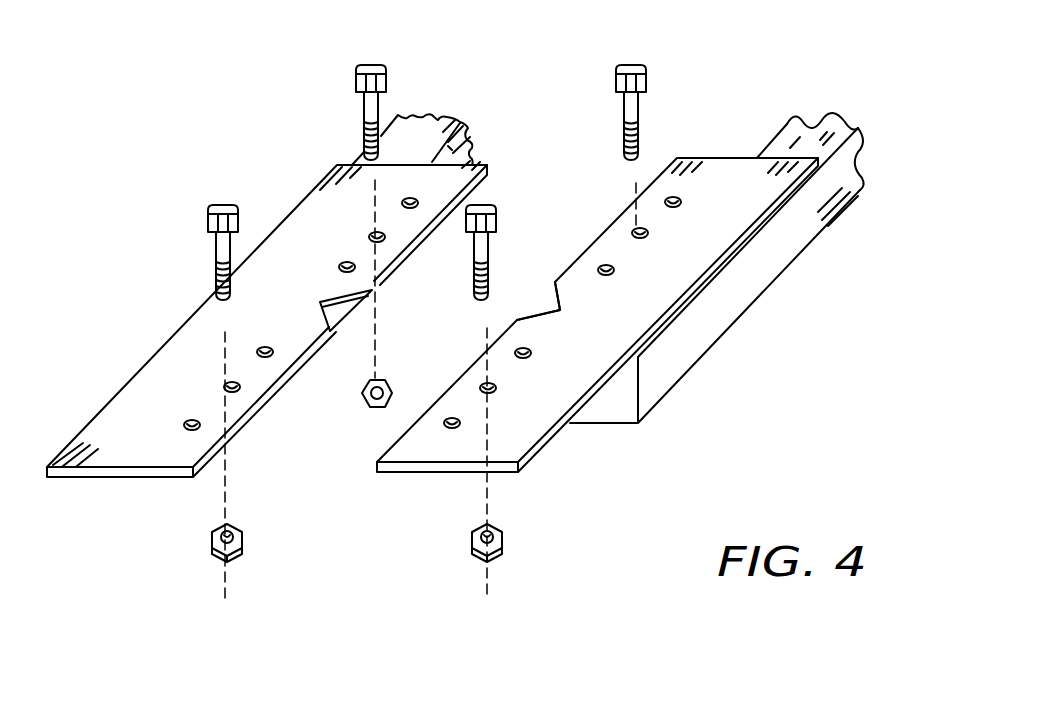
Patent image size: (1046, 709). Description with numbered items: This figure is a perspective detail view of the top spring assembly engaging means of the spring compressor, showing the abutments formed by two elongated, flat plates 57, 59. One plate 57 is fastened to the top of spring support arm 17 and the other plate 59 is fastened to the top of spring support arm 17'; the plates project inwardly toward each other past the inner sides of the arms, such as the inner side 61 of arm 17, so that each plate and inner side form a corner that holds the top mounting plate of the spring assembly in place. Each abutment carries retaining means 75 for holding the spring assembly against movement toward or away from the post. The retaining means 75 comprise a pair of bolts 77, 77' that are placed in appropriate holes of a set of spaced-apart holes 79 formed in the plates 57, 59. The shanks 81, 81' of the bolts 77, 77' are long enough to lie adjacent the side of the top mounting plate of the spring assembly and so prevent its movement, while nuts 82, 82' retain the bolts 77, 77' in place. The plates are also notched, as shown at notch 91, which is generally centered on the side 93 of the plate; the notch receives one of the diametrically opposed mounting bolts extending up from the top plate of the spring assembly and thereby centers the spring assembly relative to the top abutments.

The top support arm 17 is at (444, 112).
The top support arm 17' is at (736, 245).
The plate 57 is at (165, 346).
The plate 59 is at (545, 447).
The inner side of support arm 61 is at (473, 142).
The retaining means 75 is at (210, 200).
The bolt 77 is at (343, 252).
The bolt 77' is at (500, 112).
The spaced-apart holes 79 is at (198, 424).
The bolt shank 81 is at (304, 209).
The bolt shank 81' is at (590, 143).
The nut 82 is at (391, 542).
The nut 82' is at (402, 376).
The notch 91 is at (345, 312).
The side of plate 93 is at (378, 458).